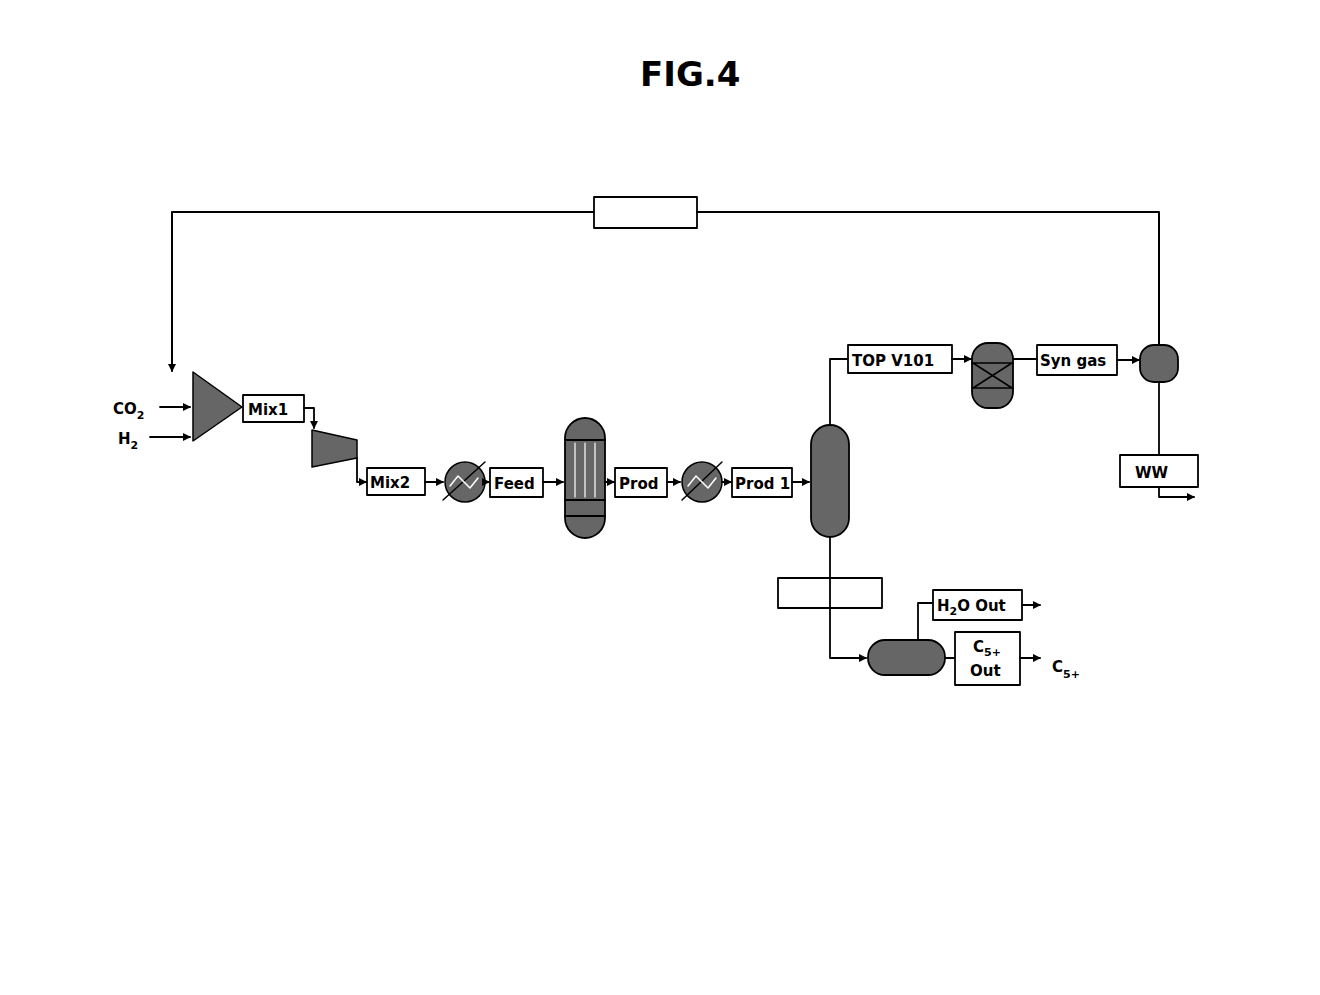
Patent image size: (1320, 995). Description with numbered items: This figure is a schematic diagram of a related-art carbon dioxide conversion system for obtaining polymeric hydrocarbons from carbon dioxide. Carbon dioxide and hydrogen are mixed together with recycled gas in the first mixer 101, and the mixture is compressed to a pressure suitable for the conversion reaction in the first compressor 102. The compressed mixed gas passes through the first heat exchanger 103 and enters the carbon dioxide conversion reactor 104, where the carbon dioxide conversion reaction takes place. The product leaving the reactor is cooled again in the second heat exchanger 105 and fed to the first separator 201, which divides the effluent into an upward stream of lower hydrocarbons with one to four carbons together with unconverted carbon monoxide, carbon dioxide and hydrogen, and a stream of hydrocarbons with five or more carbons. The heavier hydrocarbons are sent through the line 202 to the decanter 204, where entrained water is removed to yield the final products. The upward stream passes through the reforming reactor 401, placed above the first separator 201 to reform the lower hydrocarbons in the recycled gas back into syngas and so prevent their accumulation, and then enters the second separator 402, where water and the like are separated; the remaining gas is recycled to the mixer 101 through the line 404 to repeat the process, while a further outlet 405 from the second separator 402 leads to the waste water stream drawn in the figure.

The first mixer 101 is at (212, 442).
The first compressor 102 is at (325, 474).
The first heat exchanger 103 is at (463, 508).
The carbon dioxide conversion reactor 104 is at (575, 536).
The second heat exchanger 105 is at (708, 508).
The first separator 201 is at (808, 526).
The line 202 is at (826, 612).
The decanter 204 is at (893, 684).
The reforming reactor 401 is at (981, 418).
The second separator 402 is at (1187, 371).
The line 404 is at (761, 216).
The purge stream 405 is at (1164, 420).